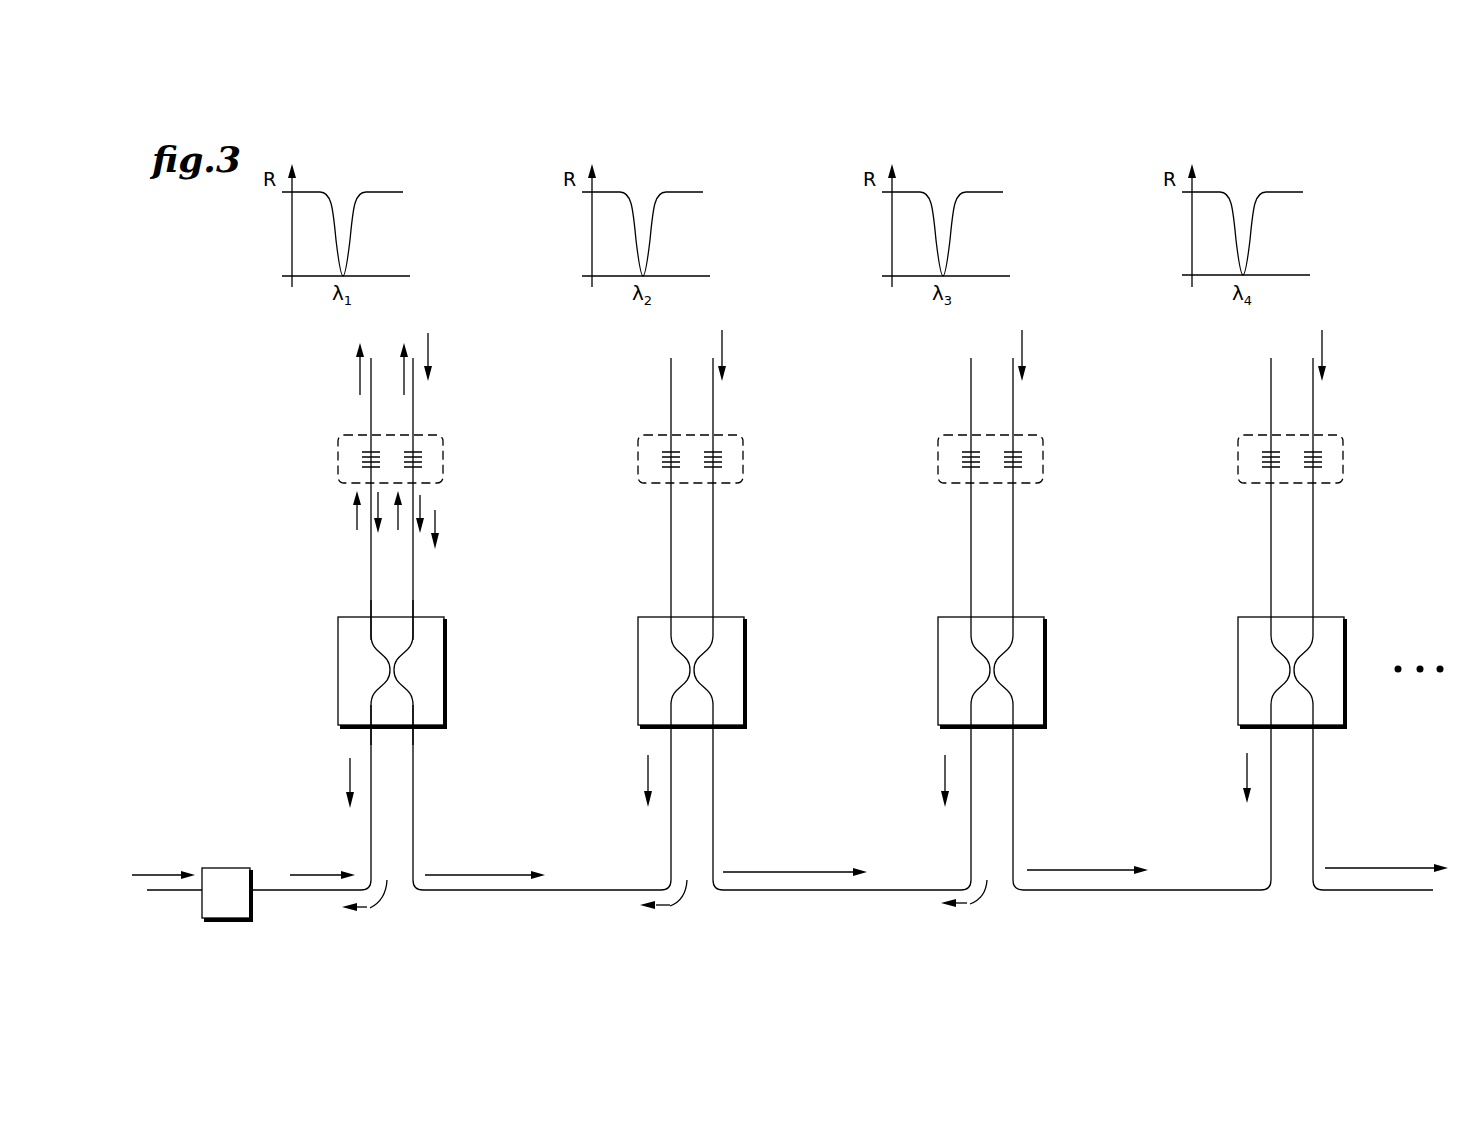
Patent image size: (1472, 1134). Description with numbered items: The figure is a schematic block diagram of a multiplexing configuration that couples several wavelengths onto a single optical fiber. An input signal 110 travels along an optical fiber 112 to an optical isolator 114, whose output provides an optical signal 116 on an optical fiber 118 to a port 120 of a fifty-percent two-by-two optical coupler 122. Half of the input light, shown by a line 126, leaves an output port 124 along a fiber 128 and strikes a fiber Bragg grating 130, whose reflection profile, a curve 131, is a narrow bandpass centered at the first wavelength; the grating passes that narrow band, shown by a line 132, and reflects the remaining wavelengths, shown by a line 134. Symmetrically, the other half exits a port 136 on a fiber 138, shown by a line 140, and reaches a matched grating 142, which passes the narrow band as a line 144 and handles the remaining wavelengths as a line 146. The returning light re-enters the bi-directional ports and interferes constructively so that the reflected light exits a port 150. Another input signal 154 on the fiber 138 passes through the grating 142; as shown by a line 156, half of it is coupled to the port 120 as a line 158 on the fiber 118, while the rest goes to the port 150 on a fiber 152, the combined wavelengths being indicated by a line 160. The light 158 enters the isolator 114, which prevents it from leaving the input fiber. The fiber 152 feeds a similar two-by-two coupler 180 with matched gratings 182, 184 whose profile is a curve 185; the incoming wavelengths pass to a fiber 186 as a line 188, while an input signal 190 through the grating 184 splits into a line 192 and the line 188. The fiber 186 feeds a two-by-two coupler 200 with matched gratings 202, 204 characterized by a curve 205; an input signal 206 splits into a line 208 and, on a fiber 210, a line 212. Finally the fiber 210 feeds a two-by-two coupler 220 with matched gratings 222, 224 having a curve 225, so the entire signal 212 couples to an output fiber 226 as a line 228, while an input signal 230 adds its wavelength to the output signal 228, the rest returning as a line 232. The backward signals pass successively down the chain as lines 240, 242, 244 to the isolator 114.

The input signal 110 is at (163, 870).
The optical fiber 112 is at (192, 896).
The optical isolator 114 is at (247, 868).
The optical signal 116 is at (328, 866).
The optical fiber 118 is at (272, 895).
The port 120 is at (371, 723).
The 2×2 optical coupler 122 is at (378, 680).
The output port 124 is at (371, 621).
The line 126 is at (354, 525).
The fiber 128 is at (369, 583).
The fiber Bragg grating 130 is at (315, 277).
The curve 131 is at (376, 192).
The line 132 is at (378, 518).
The line 134 is at (357, 372).
The port 136 is at (414, 621).
The fiber 138 is at (415, 594).
The line 140 is at (398, 530).
The grating 142 is at (422, 462).
The line 144 is at (422, 497).
The line 146 is at (402, 372).
The port 150 is at (414, 722).
The fiber 152 is at (566, 896).
The input signal 154 is at (432, 340).
The line 156 is at (438, 524).
The line 158 is at (348, 772).
The line 160 is at (498, 868).
The 2×2 coupler 180 is at (678, 680).
The grating 182 is at (615, 277).
The grating 184 is at (722, 462).
The curve 185 is at (676, 192).
The fiber 186 is at (881, 896).
The line 188 is at (836, 870).
The input signal 190 is at (726, 340).
The line 192 is at (646, 770).
The 2×2 coupler 200 is at (978, 680).
The grating 202 is at (915, 277).
The grating 204 is at (1022, 462).
The curve 205 is at (976, 192).
The input signal 206 is at (1026, 340).
The line 208 is at (943, 770).
The fiber 210 is at (1197, 893).
The line 212 is at (1118, 870).
The 2×2 coupler 220 is at (1278, 680).
The grating 222 is at (1215, 277).
The grating 224 is at (1322, 462).
The curve 225 is at (1276, 192).
The output fiber 226 is at (1400, 891).
The output signal 228 is at (1396, 868).
The input signal 230 is at (1326, 340).
The line 232 is at (1244, 768).
The backward propagating signal λ3,λ4 240 is at (970, 910).
The line 242 is at (673, 912).
The line 244 is at (372, 912).